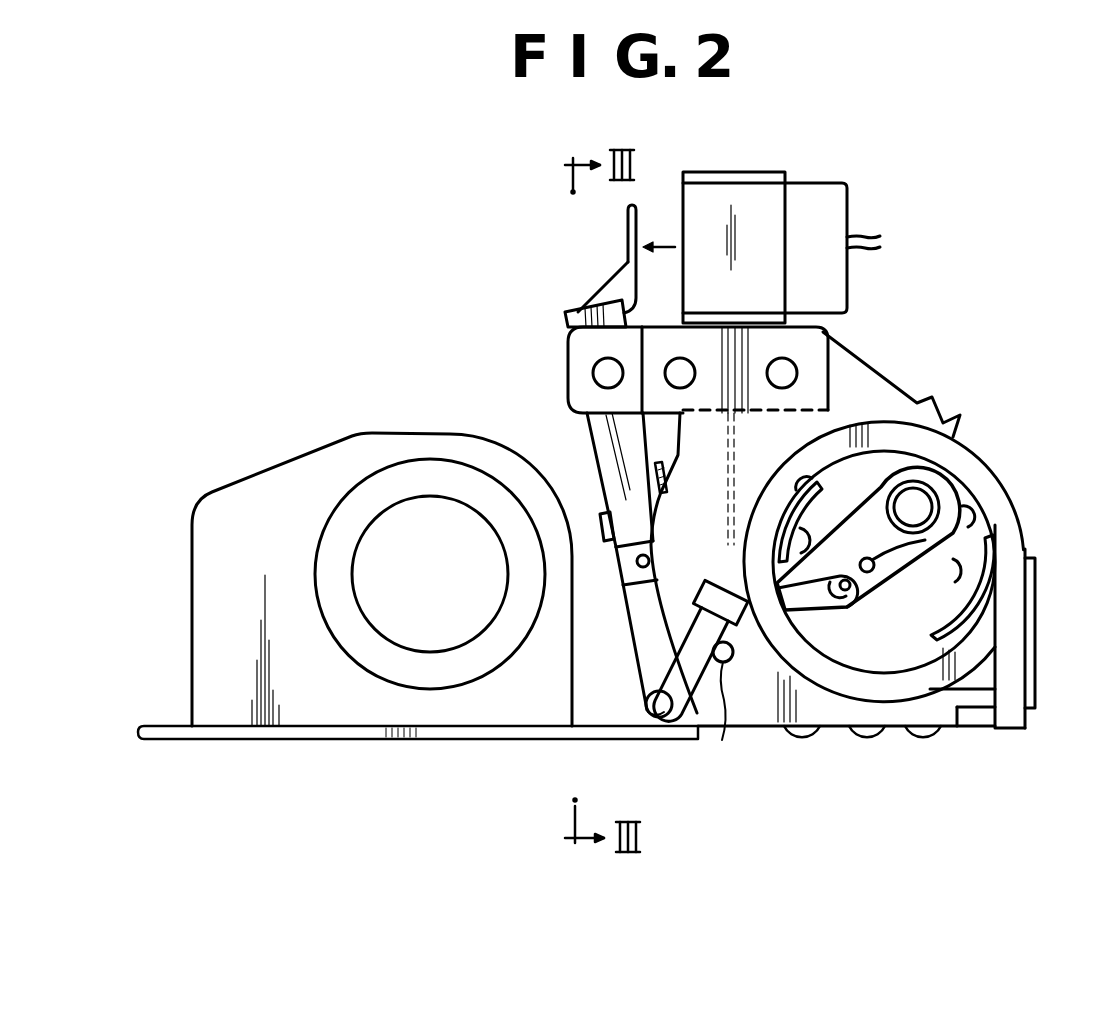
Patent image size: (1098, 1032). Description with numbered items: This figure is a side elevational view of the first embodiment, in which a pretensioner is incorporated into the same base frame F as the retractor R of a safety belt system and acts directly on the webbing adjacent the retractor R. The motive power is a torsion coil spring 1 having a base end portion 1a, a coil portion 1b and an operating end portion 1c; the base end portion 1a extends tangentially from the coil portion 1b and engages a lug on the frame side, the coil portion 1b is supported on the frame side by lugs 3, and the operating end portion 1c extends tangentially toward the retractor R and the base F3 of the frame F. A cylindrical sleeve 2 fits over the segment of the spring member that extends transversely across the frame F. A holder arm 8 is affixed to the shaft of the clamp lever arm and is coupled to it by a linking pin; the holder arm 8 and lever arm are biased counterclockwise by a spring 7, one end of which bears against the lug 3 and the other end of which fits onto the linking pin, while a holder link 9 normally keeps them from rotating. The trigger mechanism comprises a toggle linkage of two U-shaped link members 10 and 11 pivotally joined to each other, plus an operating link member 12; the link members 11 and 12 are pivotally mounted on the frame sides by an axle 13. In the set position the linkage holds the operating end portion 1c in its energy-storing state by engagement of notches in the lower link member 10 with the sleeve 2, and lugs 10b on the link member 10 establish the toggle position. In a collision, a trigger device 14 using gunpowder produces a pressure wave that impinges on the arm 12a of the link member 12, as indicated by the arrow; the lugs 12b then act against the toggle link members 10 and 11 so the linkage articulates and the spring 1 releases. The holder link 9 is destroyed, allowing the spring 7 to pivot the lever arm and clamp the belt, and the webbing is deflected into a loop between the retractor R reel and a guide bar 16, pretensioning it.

The retractor R is at (290, 452).
The base of the frame F3 is at (467, 740).
The trigger device 14 is at (823, 193).
The axle 13 is at (600, 375).
The base frame F is at (757, 713).
The operating link member 12 is at (602, 437).
The arm of the link member 12a is at (627, 228).
The lugs on the link member 12b is at (598, 525).
The lower link member 10 is at (647, 640).
The lugs on the legs of the link member 10b is at (692, 481).
The link member 11 is at (628, 563).
The cylindrical sleeve 2 is at (677, 717).
The operating end portion 1c is at (663, 720).
The torsion coil spring 1 is at (898, 708).
The coil portion 1b is at (847, 680).
The base end portion 1a is at (1003, 717).
The lugs 3 is at (812, 493).
The spring 7 is at (947, 487).
The holder arm 8 is at (983, 513).
The holder link 9 is at (735, 648).
The guide bar 16 is at (723, 740).